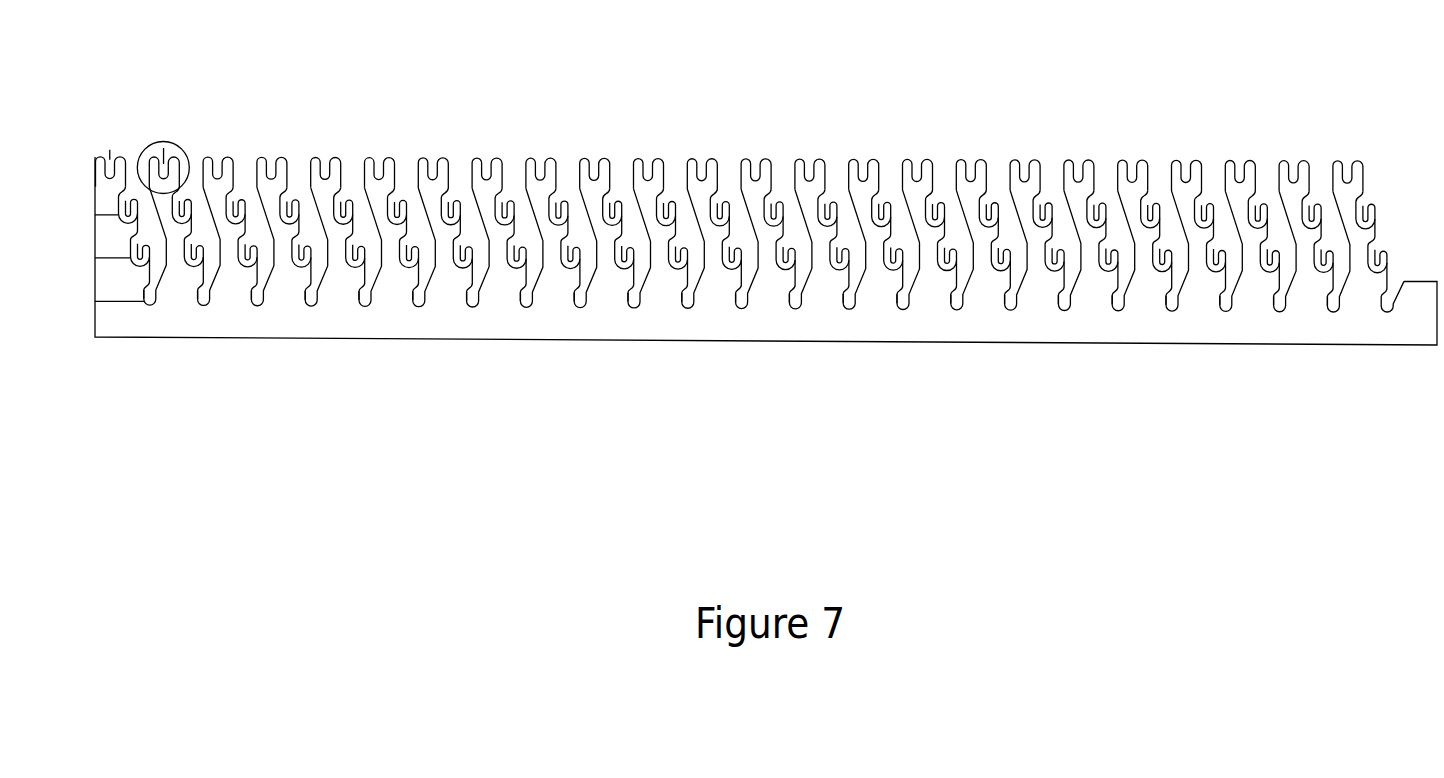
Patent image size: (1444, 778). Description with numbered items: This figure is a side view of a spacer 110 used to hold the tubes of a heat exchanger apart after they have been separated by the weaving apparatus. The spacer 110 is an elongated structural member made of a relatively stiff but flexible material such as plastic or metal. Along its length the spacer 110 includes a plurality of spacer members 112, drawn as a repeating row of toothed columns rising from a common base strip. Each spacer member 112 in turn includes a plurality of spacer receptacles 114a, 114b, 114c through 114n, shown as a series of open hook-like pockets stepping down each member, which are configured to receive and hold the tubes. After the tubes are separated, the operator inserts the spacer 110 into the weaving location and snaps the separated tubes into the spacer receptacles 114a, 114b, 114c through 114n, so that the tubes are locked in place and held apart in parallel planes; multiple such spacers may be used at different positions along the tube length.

The spacer 110 is at (766, 273).
The spacer member 112 is at (1093, 310).
The spacer receptacle 114a is at (867, 160).
The spacer receptacle 114b is at (875, 204).
The spacer receptacle 114c is at (878, 258).
The spacer receptacle 114n is at (907, 307).